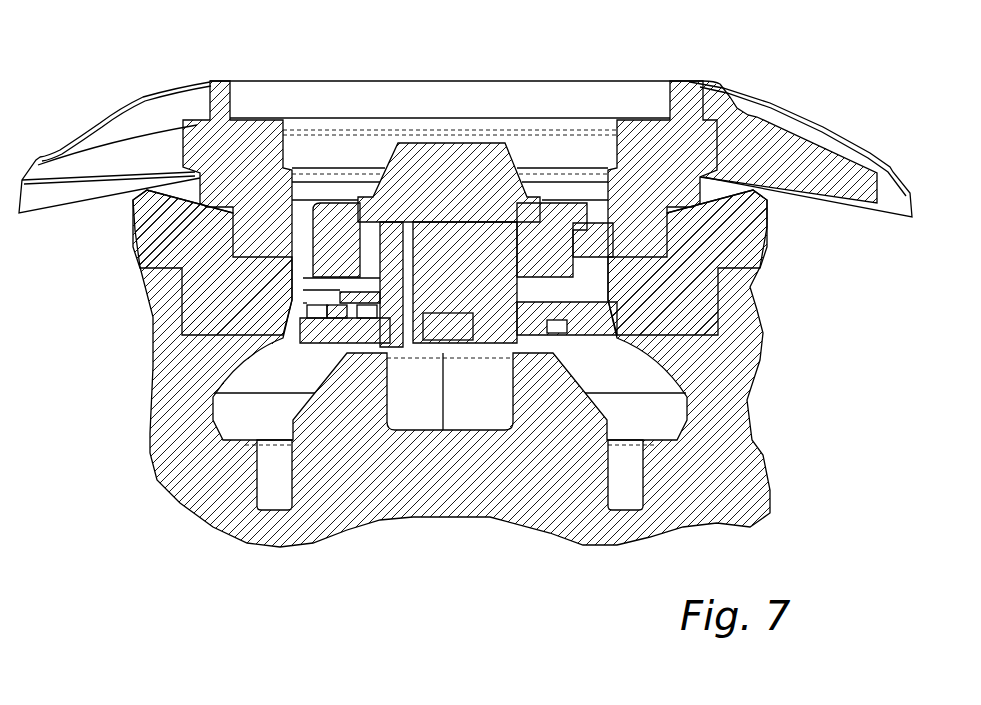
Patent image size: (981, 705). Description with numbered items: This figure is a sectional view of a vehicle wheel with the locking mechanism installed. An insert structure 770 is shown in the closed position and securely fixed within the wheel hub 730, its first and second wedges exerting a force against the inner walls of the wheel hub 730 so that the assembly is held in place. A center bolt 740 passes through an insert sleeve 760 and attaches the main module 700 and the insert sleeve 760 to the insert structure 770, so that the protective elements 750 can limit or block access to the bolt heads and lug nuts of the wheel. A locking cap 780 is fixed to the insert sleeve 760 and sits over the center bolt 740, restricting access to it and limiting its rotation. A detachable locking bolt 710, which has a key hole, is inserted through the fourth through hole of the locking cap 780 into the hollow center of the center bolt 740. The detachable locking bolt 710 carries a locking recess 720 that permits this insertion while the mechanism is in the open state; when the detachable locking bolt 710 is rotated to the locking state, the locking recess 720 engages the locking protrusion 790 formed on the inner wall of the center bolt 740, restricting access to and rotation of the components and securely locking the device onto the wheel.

The main module 700 is at (145, 92).
The detachable locking bolt 710 is at (455, 205).
The locking recess 720 is at (457, 335).
The wheel hub 730 is at (154, 291).
The center bolt 740 is at (390, 330).
The protective elements 750 is at (92, 206).
The insert sleeve 760 is at (353, 257).
The insert structure 770 is at (322, 335).
The locking cap 780 is at (385, 215).
The locking protrusion 790 is at (395, 250).